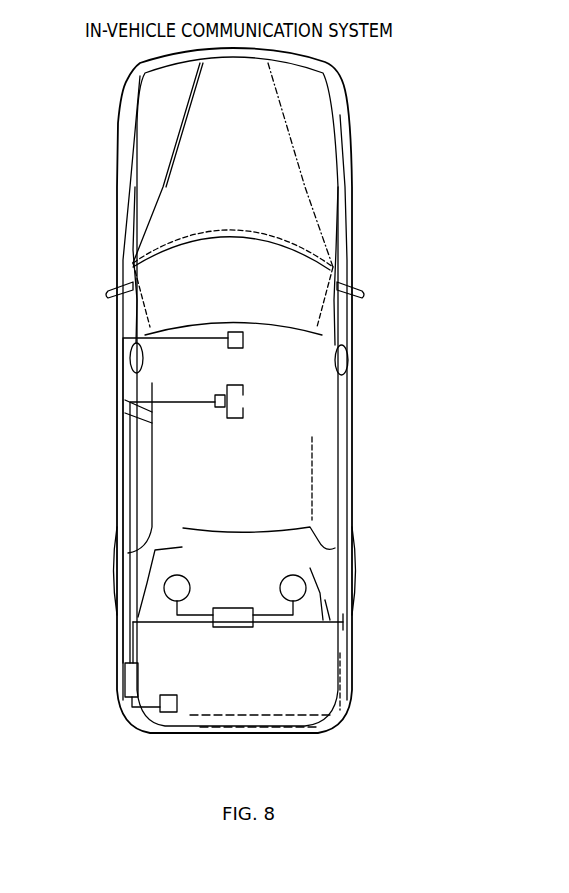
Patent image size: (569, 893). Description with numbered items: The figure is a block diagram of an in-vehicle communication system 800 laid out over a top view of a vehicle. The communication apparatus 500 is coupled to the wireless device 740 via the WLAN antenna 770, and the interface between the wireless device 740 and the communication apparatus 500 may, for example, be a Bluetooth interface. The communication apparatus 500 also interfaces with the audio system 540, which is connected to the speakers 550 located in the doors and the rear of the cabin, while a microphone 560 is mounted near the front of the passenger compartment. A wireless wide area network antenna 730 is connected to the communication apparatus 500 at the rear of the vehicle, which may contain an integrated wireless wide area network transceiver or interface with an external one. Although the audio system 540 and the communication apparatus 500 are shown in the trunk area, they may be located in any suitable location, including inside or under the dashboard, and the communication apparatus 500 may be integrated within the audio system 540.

The in-vehicle communication system 800 is at (550, 111).
The microphone 560 is at (243, 333).
The speaker 550 is at (127, 362).
The wireless local area network (WLAN) antenna 770 is at (215, 398).
The wireless device 740 is at (282, 400).
The audio system 540 is at (133, 624).
The communication apparatus 500 is at (137, 672).
The wireless wide area network antenna 730 is at (168, 712).